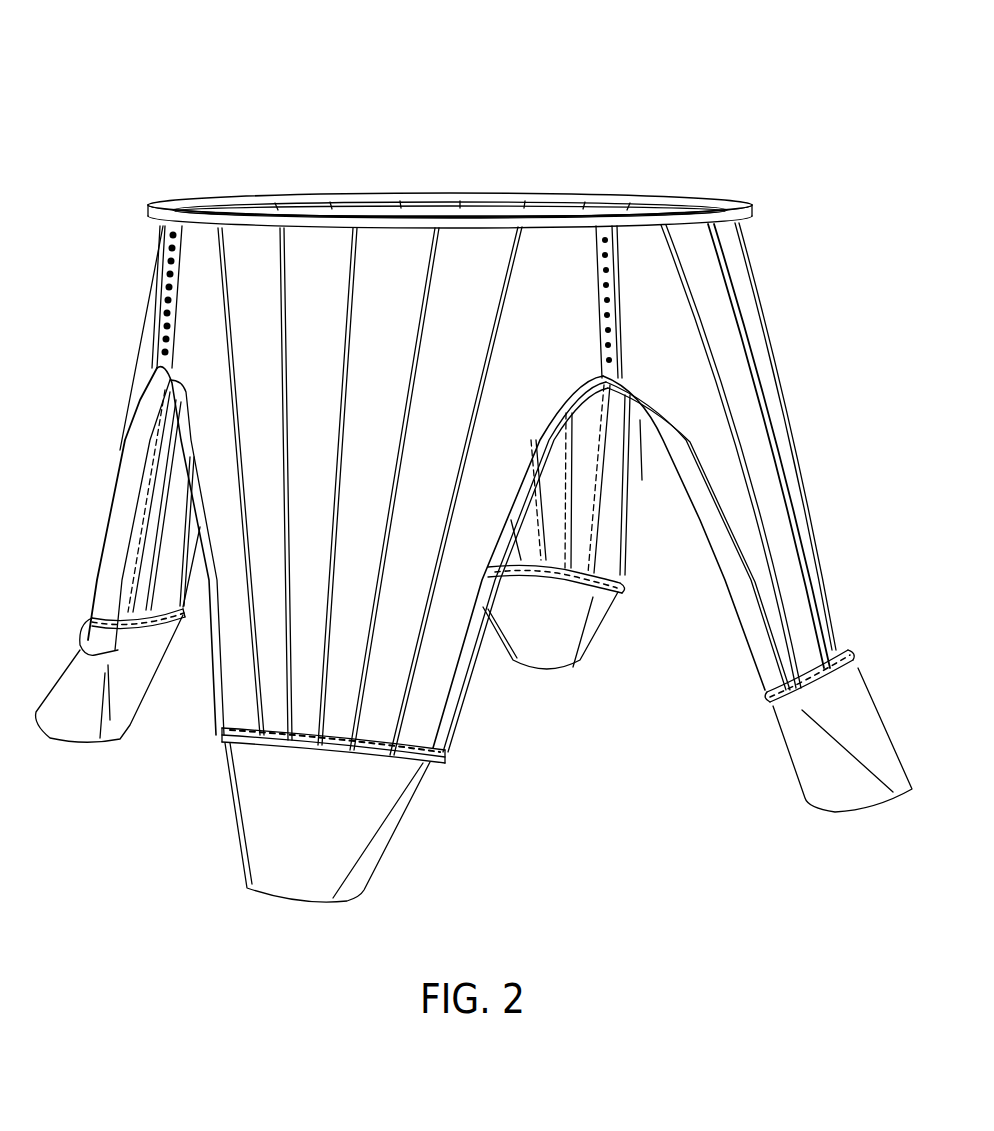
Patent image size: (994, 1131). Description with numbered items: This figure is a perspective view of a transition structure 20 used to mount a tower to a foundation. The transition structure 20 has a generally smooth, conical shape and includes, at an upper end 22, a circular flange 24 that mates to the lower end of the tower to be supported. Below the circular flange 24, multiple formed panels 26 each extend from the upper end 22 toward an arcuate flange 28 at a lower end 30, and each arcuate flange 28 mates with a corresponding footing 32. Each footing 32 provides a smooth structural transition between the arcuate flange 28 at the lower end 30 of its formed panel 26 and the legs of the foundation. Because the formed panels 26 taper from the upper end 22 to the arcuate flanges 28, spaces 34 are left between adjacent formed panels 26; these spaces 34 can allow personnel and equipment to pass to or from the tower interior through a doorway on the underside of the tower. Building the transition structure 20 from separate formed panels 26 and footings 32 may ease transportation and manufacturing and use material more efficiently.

The transition structure 20 is at (183, 66).
The upper end 22 is at (252, 250).
The circular flange 24 is at (162, 203).
The formed panels 26 is at (392, 336).
The arcuate flange 28 is at (447, 746).
The lower end 30 is at (435, 672).
The footing 32 is at (80, 738).
The spaces 34 is at (670, 541).